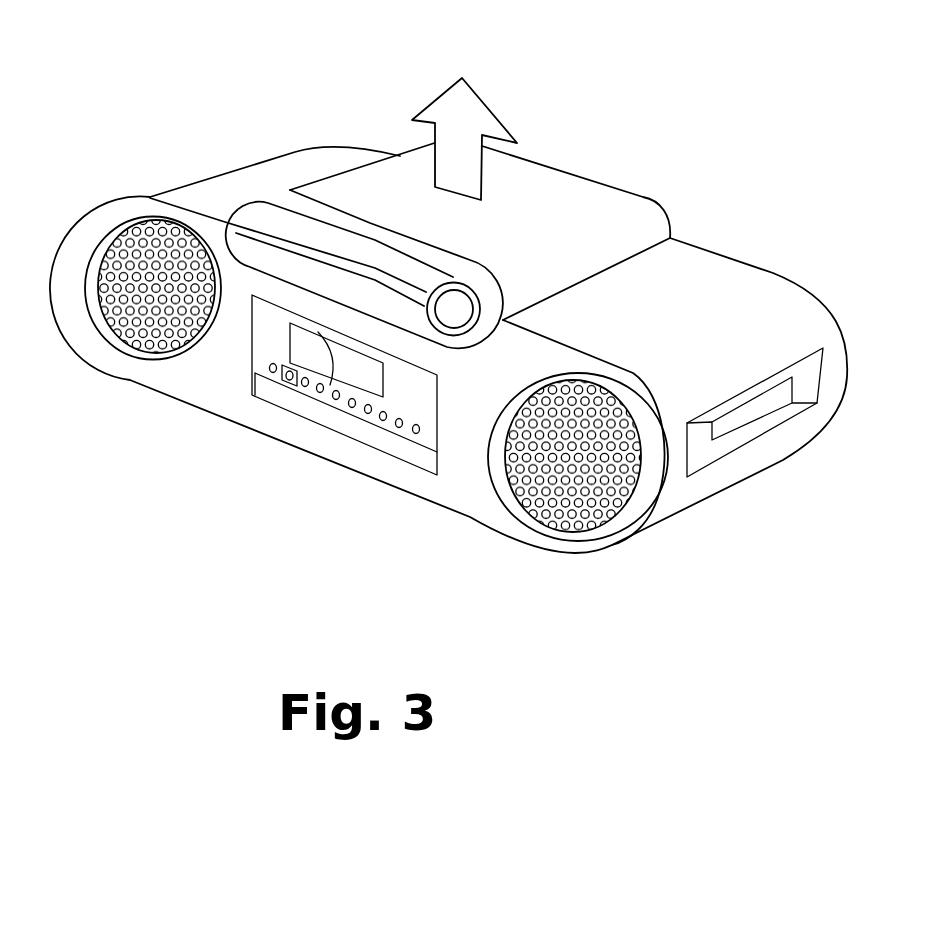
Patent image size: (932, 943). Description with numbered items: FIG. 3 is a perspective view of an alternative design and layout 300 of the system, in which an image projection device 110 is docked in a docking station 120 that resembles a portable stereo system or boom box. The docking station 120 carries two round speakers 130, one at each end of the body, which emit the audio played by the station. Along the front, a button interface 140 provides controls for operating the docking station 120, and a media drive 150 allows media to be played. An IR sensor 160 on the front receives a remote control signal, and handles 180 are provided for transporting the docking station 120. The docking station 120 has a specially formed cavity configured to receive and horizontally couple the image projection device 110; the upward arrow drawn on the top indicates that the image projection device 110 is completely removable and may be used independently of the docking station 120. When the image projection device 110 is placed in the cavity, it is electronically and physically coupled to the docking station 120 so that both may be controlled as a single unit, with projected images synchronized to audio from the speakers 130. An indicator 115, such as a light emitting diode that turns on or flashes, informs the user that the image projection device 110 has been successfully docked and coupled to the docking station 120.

The alternative design and layout 300 is at (264, 110).
The image projection device 110 is at (537, 212).
The docking station 120 is at (705, 297).
The speakers 130 is at (568, 472).
The button interface 140 is at (399, 427).
The media drive 150 is at (323, 413).
The IR sensor 160 is at (288, 378).
The indicator 115 is at (416, 434).
The handles 180 is at (707, 442).